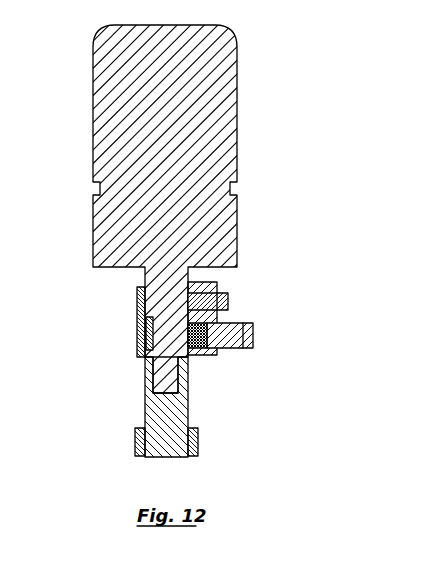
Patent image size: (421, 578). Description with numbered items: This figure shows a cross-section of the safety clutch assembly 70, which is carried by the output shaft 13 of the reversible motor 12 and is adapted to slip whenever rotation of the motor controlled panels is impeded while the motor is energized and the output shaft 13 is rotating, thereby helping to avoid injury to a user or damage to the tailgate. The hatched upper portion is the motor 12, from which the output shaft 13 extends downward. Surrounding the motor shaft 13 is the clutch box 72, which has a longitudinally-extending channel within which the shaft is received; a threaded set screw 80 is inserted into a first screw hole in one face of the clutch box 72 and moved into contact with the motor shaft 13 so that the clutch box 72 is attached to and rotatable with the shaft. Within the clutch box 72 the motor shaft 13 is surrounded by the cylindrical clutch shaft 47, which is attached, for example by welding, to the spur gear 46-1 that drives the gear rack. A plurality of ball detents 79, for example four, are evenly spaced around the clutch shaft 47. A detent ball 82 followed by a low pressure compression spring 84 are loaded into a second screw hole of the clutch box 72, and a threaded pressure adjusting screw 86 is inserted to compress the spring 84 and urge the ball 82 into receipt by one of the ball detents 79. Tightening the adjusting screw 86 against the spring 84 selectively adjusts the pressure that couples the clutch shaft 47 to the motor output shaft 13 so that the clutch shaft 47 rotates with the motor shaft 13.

The reversible motor 12 is at (220, 97).
The output shaft 13 is at (188, 415).
The spur gear 46-1 is at (198, 452).
The clutch shaft 47 is at (144, 416).
The safety clutch assembly 70 is at (175, 369).
The clutch box 72 is at (137, 298).
The ball detents 79 is at (146, 333).
The threaded set screw 80 is at (222, 293).
The detent ball 82 is at (194, 356).
The compression spring 84 is at (210, 350).
The pressure adjusting screw 86 is at (243, 322).